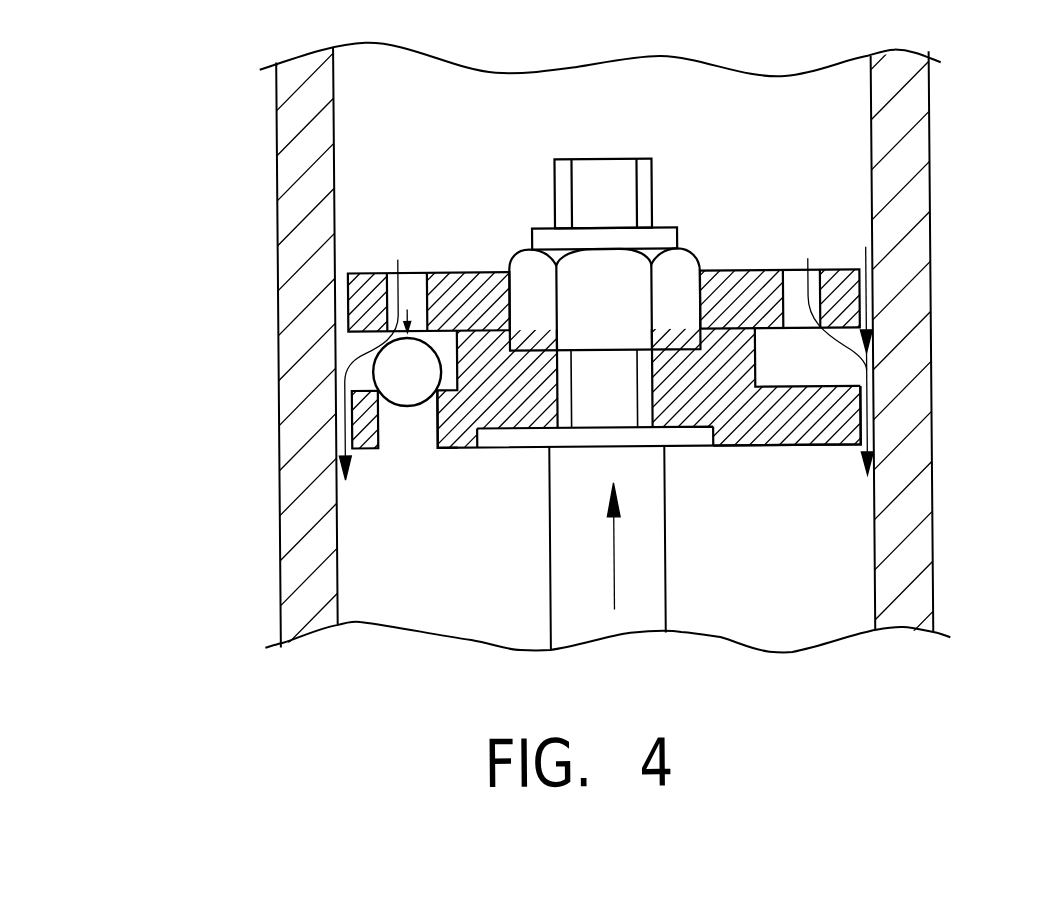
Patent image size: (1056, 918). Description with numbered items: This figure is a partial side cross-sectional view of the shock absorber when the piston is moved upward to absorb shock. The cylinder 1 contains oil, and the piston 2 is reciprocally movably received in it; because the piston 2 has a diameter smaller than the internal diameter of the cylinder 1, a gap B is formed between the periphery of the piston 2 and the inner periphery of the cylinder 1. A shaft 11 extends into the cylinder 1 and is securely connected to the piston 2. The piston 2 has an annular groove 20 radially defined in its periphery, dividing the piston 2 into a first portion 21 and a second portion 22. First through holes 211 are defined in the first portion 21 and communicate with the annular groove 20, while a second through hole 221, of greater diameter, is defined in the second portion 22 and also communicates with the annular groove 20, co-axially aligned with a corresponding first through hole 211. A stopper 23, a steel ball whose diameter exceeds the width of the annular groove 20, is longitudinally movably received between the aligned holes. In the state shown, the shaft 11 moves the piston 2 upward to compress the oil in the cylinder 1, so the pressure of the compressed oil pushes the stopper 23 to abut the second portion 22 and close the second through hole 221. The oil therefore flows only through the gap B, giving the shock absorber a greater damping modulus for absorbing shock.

The cylinder 1 is at (912, 156).
The piston 2 is at (634, 457).
The shaft 11 is at (636, 603).
The annular groove 20 is at (803, 372).
The first portion 21 is at (651, 328).
The first through hole 211 is at (787, 304).
The second portion 22 is at (820, 425).
The second through hole 221 is at (380, 427).
The stopper 23 is at (400, 366).
The gap B is at (871, 428).